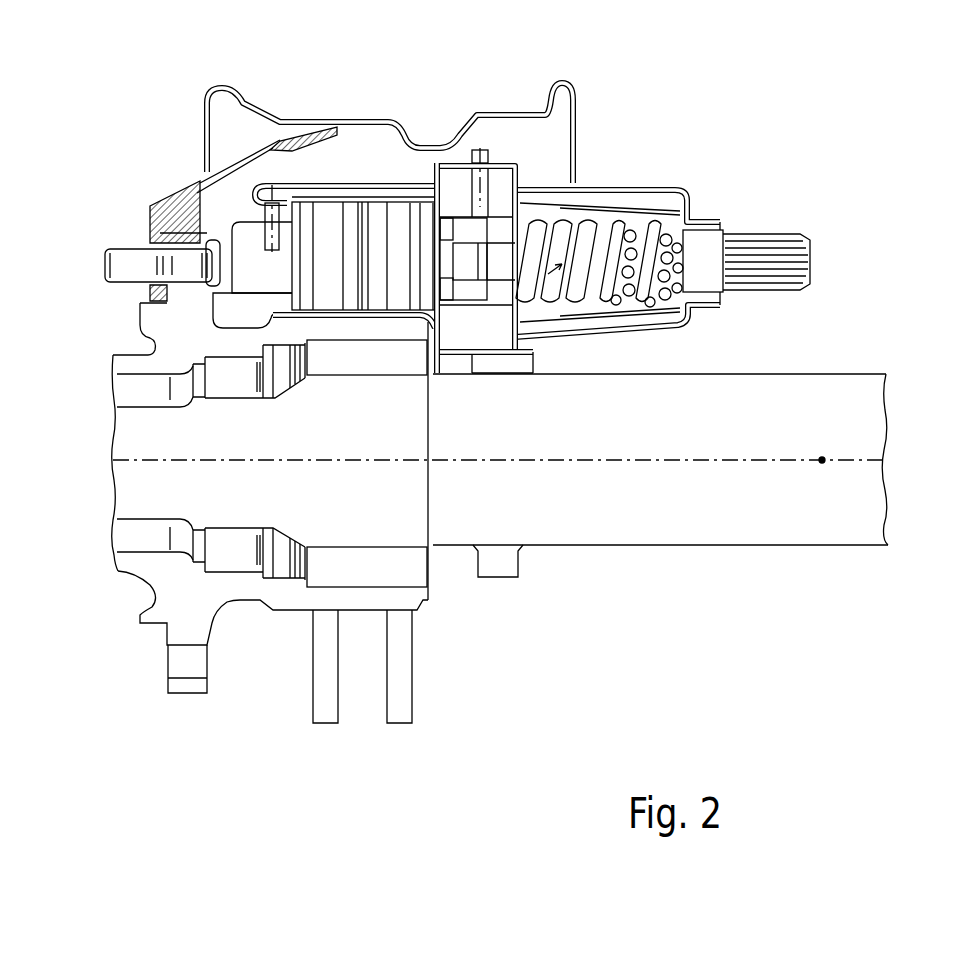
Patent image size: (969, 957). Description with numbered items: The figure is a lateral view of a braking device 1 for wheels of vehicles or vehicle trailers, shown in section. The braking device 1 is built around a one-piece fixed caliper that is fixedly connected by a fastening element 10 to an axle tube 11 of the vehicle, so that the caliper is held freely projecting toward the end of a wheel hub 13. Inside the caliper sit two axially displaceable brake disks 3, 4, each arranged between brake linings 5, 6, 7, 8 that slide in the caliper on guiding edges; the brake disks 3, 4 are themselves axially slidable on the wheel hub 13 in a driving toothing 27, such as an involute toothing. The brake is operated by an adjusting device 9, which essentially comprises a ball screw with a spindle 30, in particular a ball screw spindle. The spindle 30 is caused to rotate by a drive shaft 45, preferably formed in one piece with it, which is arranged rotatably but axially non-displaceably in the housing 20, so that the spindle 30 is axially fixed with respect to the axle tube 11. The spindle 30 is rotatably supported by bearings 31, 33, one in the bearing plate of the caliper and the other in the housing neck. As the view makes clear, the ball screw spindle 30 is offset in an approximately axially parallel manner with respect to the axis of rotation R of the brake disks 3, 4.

The braking device 1 is at (470, 411).
The brake disk 3 is at (328, 215).
The brake disk 4 is at (416, 197).
The brake lining 5 is at (436, 143).
The brake lining 6 is at (373, 213).
The brake lining 7 is at (354, 200).
The brake lining 8 is at (302, 207).
The adjusting device 9 is at (671, 187).
The fastening element 10 is at (497, 567).
The axle tube 11 is at (697, 540).
The wheel hub 13 is at (135, 562).
The housing 20 is at (622, 165).
The driving toothing 27 is at (363, 320).
The spindle 30 is at (547, 340).
The bearing 31 is at (510, 220).
The bearing 33 is at (703, 227).
The drive shaft 45 is at (780, 235).
The axis of rotation R is at (822, 461).